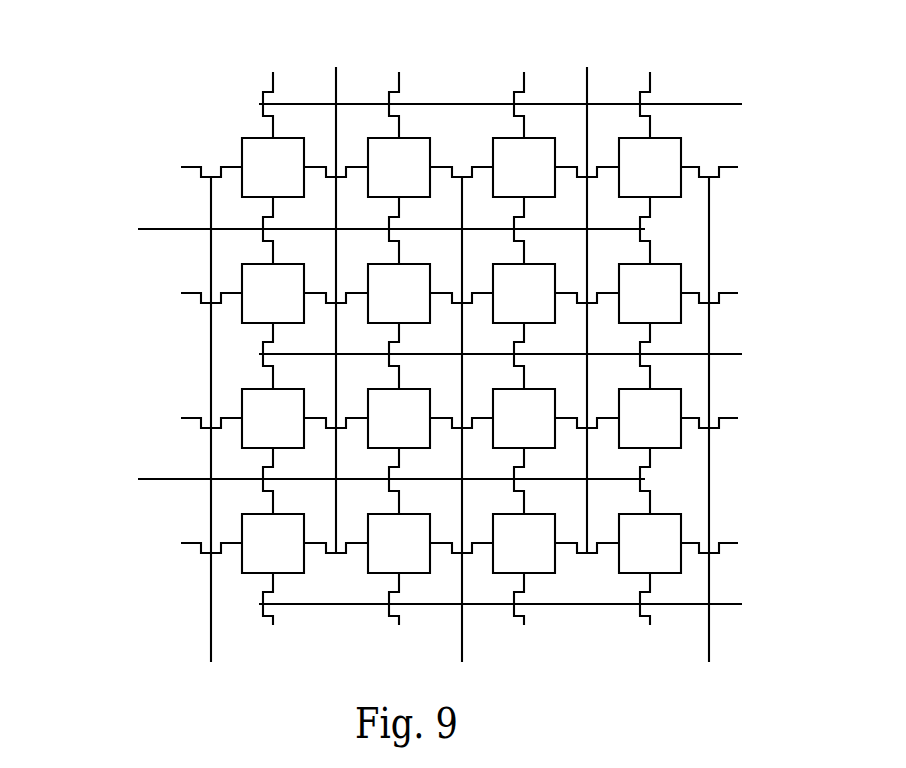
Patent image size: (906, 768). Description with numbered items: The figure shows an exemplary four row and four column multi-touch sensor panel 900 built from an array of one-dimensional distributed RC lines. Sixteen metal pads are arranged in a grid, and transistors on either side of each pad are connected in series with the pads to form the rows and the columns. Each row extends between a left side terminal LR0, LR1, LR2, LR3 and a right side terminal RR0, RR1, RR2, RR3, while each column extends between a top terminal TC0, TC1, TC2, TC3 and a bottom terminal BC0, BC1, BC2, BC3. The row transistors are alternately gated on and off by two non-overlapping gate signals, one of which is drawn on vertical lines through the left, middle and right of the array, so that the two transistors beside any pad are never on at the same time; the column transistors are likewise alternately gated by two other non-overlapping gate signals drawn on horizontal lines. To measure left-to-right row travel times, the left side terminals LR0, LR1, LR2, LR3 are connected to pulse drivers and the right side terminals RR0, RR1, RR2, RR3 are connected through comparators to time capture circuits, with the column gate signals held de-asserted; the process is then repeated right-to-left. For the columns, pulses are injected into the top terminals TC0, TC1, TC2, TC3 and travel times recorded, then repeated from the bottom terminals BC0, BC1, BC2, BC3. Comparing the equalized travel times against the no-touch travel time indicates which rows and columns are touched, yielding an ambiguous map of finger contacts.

The multi-touch sensor panel 900 is at (65, 93).
The top terminal TC0 is at (275, 279).
The top terminal TC1 is at (401, 279).
The top terminal TC2 is at (526, 279).
The top terminal TC3 is at (652, 279).
The bottom column terminal BC0 is at (274, 615).
The bottom column terminal BC1 is at (400, 615).
The bottom column terminal BC2 is at (525, 615).
The bottom column terminal BC3 is at (651, 615).
The left side terminal LR0 is at (379, 167).
The left side terminal LR1 is at (379, 293).
The left side terminal LR2 is at (379, 418).
The left side terminal LR3 is at (379, 543).
The right side terminal RR0 is at (731, 168).
The right side terminal RR1 is at (731, 294).
The right side terminal RR2 is at (731, 419).
The right side terminal RR3 is at (731, 544).